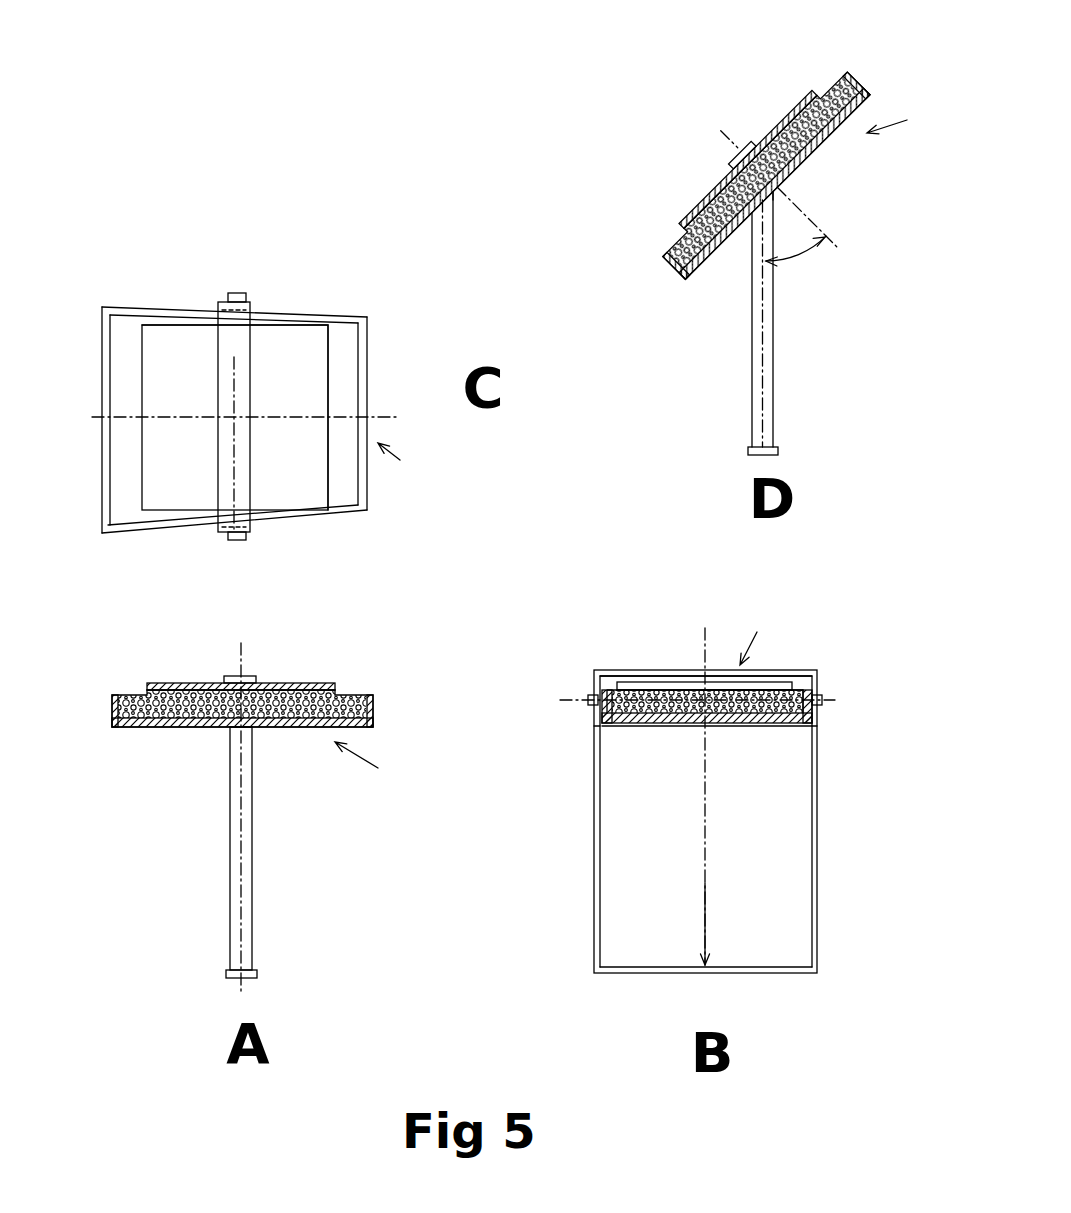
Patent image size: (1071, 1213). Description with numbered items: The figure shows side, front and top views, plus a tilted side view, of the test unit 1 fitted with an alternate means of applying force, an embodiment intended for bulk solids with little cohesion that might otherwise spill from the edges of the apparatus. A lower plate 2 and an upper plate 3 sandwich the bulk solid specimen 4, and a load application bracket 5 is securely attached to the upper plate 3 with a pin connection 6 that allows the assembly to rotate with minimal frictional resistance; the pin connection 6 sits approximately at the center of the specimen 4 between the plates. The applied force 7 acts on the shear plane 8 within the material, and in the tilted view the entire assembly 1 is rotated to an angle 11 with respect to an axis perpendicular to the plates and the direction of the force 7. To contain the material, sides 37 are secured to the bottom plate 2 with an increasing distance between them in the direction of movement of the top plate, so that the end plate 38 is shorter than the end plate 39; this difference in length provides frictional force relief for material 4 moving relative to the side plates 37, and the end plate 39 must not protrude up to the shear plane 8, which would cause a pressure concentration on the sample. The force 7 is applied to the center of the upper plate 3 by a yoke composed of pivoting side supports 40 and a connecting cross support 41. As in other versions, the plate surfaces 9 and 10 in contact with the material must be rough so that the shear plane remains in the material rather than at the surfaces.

In FIG. 5C, the test unit 1 is at (258, 448).
In FIG. 5A, the test unit 1 is at (324, 818).
In FIG. 5D, the test unit 1 is at (901, 113).
In FIG. 5B, the test unit 1 is at (732, 782).
In FIG. 5C, the lower plate 2 is at (343, 446).
In FIG. 5A, the lower plate 2 is at (266, 726).
In FIG. 5D, the lower plate 2 is at (783, 176).
In FIG. 5B, the lower plate 2 is at (735, 720).
In FIG. 5C, the upper plate 3 is at (278, 445).
In FIG. 5A, the upper plate 3 is at (295, 692).
In FIG. 5D, the upper plate 3 is at (778, 122).
In FIG. 5B, the upper plate 3 is at (675, 683).
In FIG. 5A, the bulk solid specimen 4 is at (262, 688).
In FIG. 5D, the bulk solid specimen 4 is at (763, 135).
In FIG. 5B, the bulk solid specimen 4 is at (770, 695).
In FIG. 5C, the load application bracket 5 is at (240, 485).
In FIG. 5A, the load application bracket 5 is at (237, 690).
In FIG. 5D, the load application bracket 5 is at (743, 168).
In FIG. 5B, the load application bracket 5 is at (603, 677).
In FIG. 5C, the pin connection 6 is at (246, 297).
In FIG. 5A, the pin connection 6 is at (230, 715).
In FIG. 5D, the pin connection 6 is at (783, 184).
In FIG. 5B, the pin connection 6 is at (597, 700).
In FIG. 5B, the applied force 7 is at (708, 918).
In FIG. 5A, the shear plane 8 is at (118, 698).
In FIG. 5D, the shear plane 8 is at (667, 258).
In FIG. 5B, the shear plane 8 is at (600, 698).
In FIG. 5A, the surface of upper plate 9 is at (300, 688).
In FIG. 5D, the surface of upper plate 9 is at (795, 108).
In FIG. 5B, the surface of upper plate 9 is at (730, 683).
In FIG. 5A, the surface of lower plate 10 is at (165, 720).
In FIG. 5D, the surface of lower plate 10 is at (717, 240).
In FIG. 5B, the surface of lower plate 10 is at (662, 721).
In FIG. 5D, the angle 11 is at (779, 289).
In FIG. 5C, the side plates 37 is at (293, 317).
In FIG. 5A, the side plates 37 is at (168, 700).
In FIG. 5D, the side plates 37 is at (692, 217).
In FIG. 5B, the side plates 37 is at (598, 727).
In FIG. 5C, the end plate 38 is at (360, 340).
In FIG. 5A, the end plate 38 is at (375, 700).
In FIG. 5D, the end plate 38 is at (853, 75).
In FIG. 5B, the end plate 38 is at (667, 698).
In FIG. 5C, the end plate 39 is at (106, 370).
In FIG. 5A, the end plate 39 is at (112, 707).
In FIG. 5D, the end plate 39 is at (676, 270).
In FIG. 5B, the end plate 39 is at (693, 721).
In FIG. 5C, the pivoting side supports 40 is at (228, 297).
In FIG. 5A, the pivoting side supports 40 is at (243, 783).
In FIG. 5D, the pivoting side supports 40 is at (767, 352).
In FIG. 5B, the pivoting side supports 40 is at (600, 932).
In FIG. 5A, the connecting cross support 41 is at (260, 970).
In FIG. 5D, the connecting cross support 41 is at (780, 447).
In FIG. 5B, the connecting cross support 41 is at (638, 970).